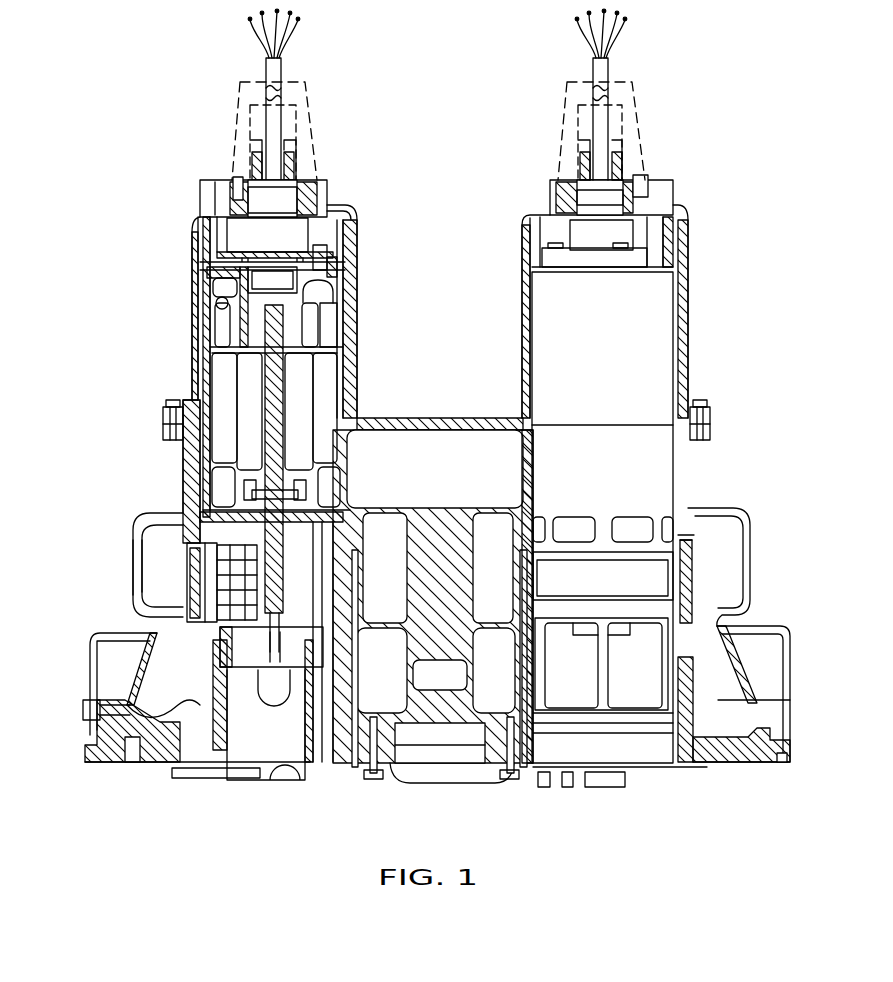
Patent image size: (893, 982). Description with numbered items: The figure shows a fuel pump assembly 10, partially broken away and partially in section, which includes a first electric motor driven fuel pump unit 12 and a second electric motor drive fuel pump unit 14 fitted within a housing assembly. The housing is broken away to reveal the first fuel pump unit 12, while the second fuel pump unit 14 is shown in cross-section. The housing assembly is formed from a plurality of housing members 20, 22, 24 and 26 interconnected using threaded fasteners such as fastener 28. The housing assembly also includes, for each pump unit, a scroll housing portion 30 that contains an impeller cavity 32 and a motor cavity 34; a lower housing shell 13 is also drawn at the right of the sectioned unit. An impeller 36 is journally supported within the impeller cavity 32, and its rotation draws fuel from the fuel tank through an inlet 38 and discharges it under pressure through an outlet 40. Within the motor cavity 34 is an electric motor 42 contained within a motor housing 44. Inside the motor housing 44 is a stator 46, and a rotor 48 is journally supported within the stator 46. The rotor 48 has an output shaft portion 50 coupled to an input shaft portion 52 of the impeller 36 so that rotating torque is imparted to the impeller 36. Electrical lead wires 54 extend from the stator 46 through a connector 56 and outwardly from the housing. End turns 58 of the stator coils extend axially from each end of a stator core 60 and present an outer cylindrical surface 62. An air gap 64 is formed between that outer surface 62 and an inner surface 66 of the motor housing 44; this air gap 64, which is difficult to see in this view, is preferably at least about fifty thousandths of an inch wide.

The fuel pump assembly 10 is at (733, 290).
The first electric motor driven fuel pump unit 12 is at (512, 305).
The lower housing shell 13 is at (752, 522).
The second electric motor drive fuel pump unit 14 is at (370, 305).
The housing member 20 is at (687, 325).
The housing member 22 is at (192, 383).
The housing member 24 is at (135, 530).
The housing member 26 is at (440, 420).
The fastener 28 is at (165, 405).
The scroll housing portion 30 is at (178, 510).
The impeller cavity 32 is at (258, 580).
The motor cavity 34 is at (215, 300).
The impeller 36 is at (240, 565).
The inlet 38 is at (160, 668).
The outlet 40 is at (150, 610).
The electric motor 42 is at (683, 278).
The motor housing 44 is at (347, 290).
The stator 46 is at (232, 433).
The rotor 48 is at (246, 455).
The output shaft portion 50 is at (340, 410).
The input shaft portion 52 is at (300, 500).
The electrical lead wires 54 is at (340, 262).
The connector 56 is at (290, 195).
The end turns 58 is at (336, 332).
The stator core 60 is at (334, 378).
The outer cylindrical surface 62 is at (231, 350).
The air gap 64 is at (216, 325).
The inner surface 66 is at (214, 314).